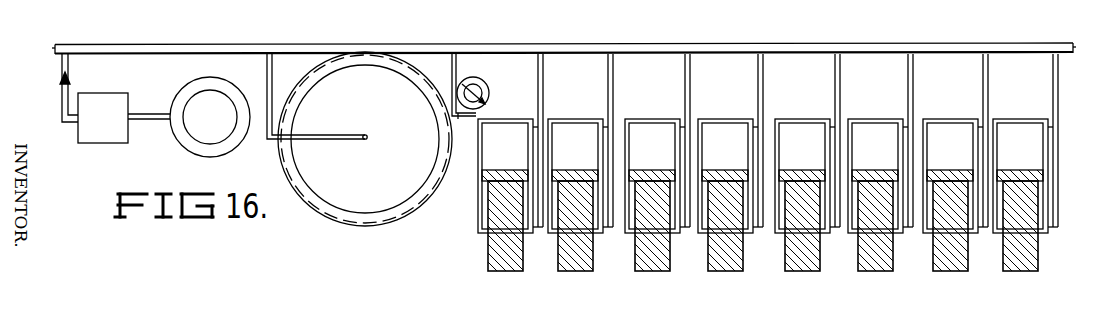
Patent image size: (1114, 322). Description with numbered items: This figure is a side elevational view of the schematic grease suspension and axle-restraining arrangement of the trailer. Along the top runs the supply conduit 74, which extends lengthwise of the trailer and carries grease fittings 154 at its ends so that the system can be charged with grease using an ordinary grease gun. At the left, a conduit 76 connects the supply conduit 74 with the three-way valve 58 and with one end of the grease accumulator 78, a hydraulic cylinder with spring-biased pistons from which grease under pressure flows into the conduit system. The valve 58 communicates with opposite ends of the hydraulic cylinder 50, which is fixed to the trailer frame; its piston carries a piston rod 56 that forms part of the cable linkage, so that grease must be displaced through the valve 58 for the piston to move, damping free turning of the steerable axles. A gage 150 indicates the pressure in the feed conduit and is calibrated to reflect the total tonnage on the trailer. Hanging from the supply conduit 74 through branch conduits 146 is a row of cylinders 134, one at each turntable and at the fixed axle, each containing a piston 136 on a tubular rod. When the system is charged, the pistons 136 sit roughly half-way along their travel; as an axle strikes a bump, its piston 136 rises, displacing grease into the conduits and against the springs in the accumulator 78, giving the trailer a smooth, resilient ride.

The grease fittings 154 is at (55, 48).
The supply conduit 74 is at (727, 47).
The conduit 76 is at (61, 84).
The three-way valve 58 is at (108, 96).
The hydraulic cylinder 50 is at (250, 78).
The piston rod 56 is at (209, 132).
The grease accumulator 78 is at (358, 228).
The gage 150 is at (481, 86).
The branch conduits 146 is at (544, 92).
The cylinder 134 is at (741, 97).
The piston 136 is at (741, 157).